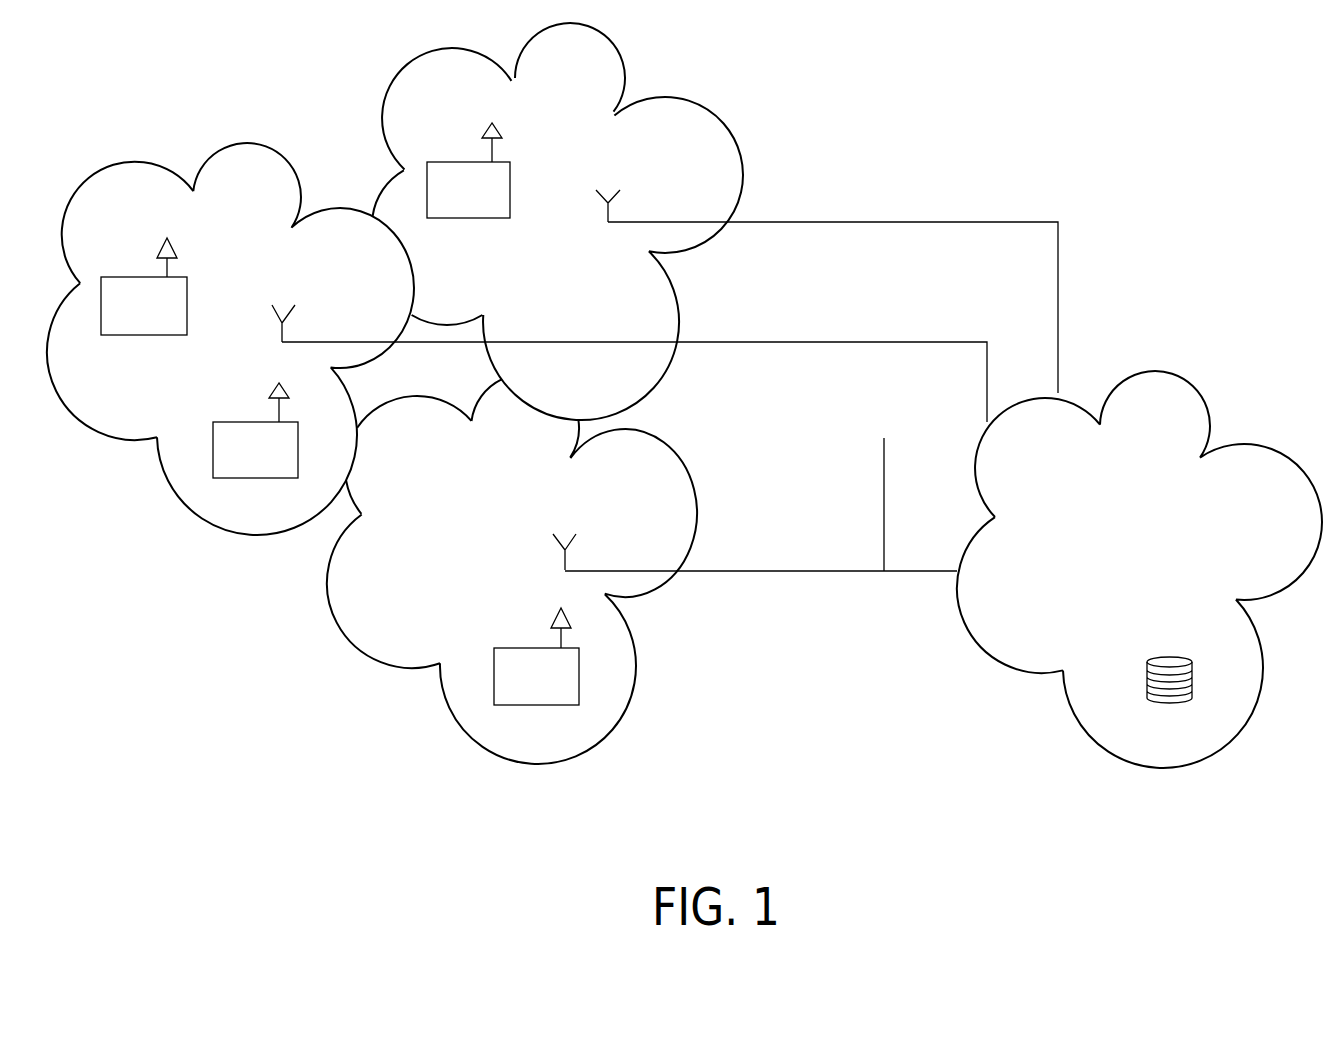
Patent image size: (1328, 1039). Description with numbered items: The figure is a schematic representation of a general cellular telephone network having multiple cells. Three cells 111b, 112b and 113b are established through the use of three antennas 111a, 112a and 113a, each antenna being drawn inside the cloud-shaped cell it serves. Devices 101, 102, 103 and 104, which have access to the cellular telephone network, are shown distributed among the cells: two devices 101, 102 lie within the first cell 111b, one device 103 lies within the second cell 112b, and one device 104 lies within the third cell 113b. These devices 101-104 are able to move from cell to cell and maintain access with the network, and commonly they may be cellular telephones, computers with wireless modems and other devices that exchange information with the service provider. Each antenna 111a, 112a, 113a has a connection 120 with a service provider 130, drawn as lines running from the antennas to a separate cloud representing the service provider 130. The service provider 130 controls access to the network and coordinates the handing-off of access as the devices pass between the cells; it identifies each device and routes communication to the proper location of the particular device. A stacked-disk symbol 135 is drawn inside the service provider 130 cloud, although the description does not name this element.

The device 101 is at (145, 337).
The device 102 is at (256, 422).
The device 103 is at (533, 648).
The device 104 is at (470, 218).
The antenna 111a is at (286, 323).
The antenna 112a is at (568, 558).
The antenna 113a is at (612, 207).
The cell 111b is at (280, 520).
The cell 112b is at (435, 450).
The cell 113b is at (588, 83).
The connection 120 is at (1058, 362).
The service provider 130 is at (1038, 603).
The database 135 is at (1178, 648).